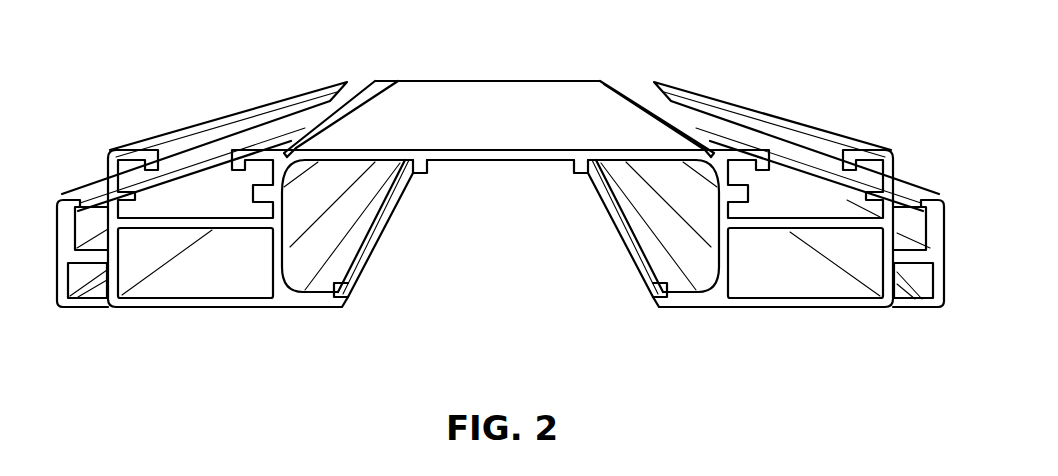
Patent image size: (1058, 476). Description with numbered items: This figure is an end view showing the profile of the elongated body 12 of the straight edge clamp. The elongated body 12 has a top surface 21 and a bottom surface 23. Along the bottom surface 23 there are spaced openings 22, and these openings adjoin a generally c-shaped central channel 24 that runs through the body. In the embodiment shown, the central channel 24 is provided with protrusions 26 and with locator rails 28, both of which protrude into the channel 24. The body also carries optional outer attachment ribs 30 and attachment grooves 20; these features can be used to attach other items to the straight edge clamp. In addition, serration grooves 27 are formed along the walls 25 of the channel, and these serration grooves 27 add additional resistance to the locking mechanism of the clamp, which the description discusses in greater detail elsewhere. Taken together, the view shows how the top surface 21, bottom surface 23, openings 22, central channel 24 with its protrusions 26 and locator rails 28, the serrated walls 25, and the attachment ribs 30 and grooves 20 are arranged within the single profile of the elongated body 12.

The elongated body 12 is at (437, 109).
The attachment grooves 20 is at (198, 152).
The top surface 21 is at (507, 97).
The spaced openings 22 is at (223, 285).
The bottom surface 23 is at (140, 306).
The central channel 24 is at (462, 272).
The walls 25 is at (343, 230).
The protrusions 26 is at (421, 175).
The serration grooves 27 is at (318, 190).
The locator rails 28 is at (342, 295).
The outer attachment ribs 30 is at (60, 218).